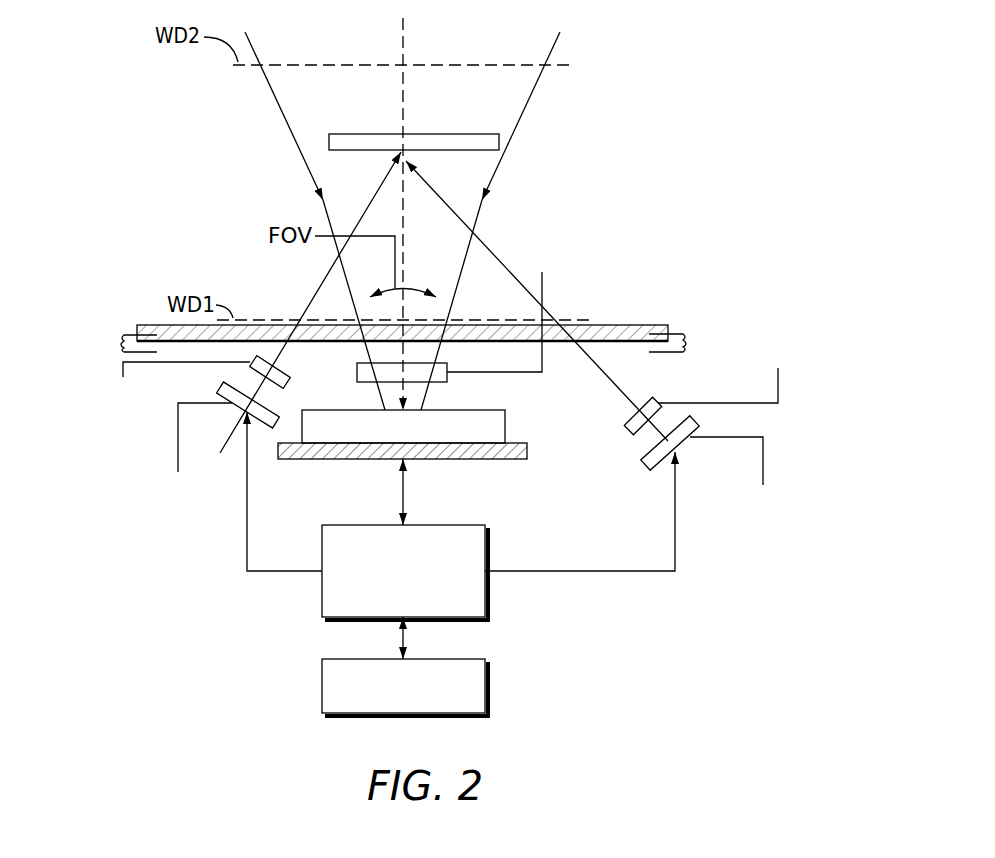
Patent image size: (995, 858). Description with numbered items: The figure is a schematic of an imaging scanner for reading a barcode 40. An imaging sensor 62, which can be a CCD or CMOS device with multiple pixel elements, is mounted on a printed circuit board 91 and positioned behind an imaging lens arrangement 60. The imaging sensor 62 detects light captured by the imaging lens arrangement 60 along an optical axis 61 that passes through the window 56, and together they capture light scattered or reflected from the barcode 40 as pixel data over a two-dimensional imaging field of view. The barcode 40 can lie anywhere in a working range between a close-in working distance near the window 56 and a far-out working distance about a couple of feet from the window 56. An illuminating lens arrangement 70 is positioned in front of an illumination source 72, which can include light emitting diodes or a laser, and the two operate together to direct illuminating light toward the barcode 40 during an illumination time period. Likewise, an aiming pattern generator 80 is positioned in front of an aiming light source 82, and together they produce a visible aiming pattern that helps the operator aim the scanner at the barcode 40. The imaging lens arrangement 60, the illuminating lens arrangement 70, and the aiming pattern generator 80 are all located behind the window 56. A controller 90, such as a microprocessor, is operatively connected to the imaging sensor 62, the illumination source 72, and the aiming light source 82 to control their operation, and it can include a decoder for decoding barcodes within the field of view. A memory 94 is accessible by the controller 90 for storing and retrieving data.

The barcode 40 is at (469, 134).
The window 56 is at (153, 325).
The imaging lens arrangement 60 is at (357, 373).
The optical axis 61 is at (405, 41).
The imaging sensor 62 is at (490, 410).
The illuminating lens arrangement 70 is at (785, 292).
The illumination source 72 is at (767, 539).
The aiming pattern generator 80 is at (101, 378).
The aiming light source 82 is at (170, 551).
The controller 90 is at (472, 525).
The printed circuit board 91 is at (440, 459).
The memory 94 is at (472, 659).